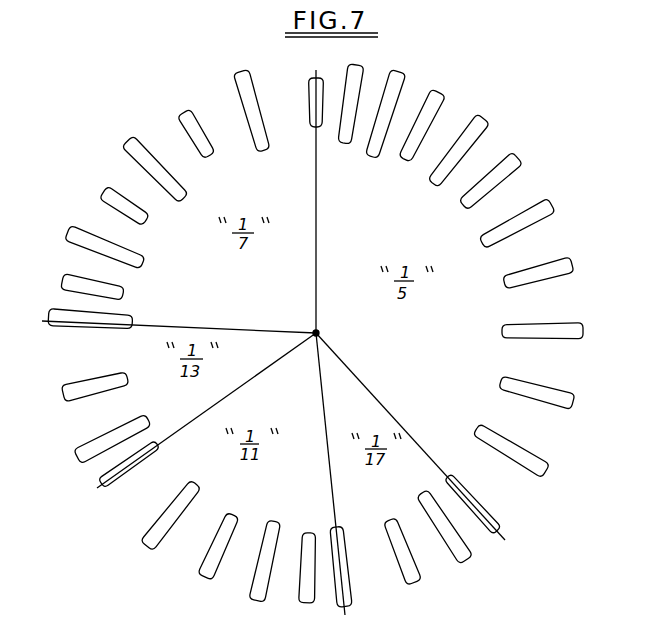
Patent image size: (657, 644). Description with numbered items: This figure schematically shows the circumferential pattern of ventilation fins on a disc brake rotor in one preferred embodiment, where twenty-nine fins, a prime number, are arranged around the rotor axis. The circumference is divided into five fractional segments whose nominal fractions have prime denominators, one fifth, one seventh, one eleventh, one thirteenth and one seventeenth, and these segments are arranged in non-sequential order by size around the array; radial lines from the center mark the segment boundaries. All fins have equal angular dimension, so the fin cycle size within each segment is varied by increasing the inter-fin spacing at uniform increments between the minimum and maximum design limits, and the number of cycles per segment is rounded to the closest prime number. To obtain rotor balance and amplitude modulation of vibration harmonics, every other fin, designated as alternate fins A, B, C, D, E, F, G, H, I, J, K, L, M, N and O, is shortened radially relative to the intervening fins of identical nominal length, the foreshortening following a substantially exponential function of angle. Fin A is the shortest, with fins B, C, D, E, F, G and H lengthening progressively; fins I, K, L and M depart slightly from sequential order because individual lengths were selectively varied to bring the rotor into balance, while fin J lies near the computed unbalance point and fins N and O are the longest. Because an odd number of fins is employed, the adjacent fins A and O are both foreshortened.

The alternate fin A is at (315, 87).
The alternate fin B is at (155, 136).
The alternate fin C is at (104, 218).
The alternate fin D is at (78, 295).
The alternate fin E is at (80, 390).
The alternate fin F is at (117, 476).
The alternate fin G is at (213, 560).
The alternate fin H is at (325, 579).
The alternate fin I is at (406, 566).
The alternate fin J is at (481, 516).
The alternate fin K is at (550, 396).
The alternate fin L is at (556, 271).
The alternate fin M is at (506, 174).
The alternate fin N is at (427, 113).
The alternate fin O is at (352, 91).